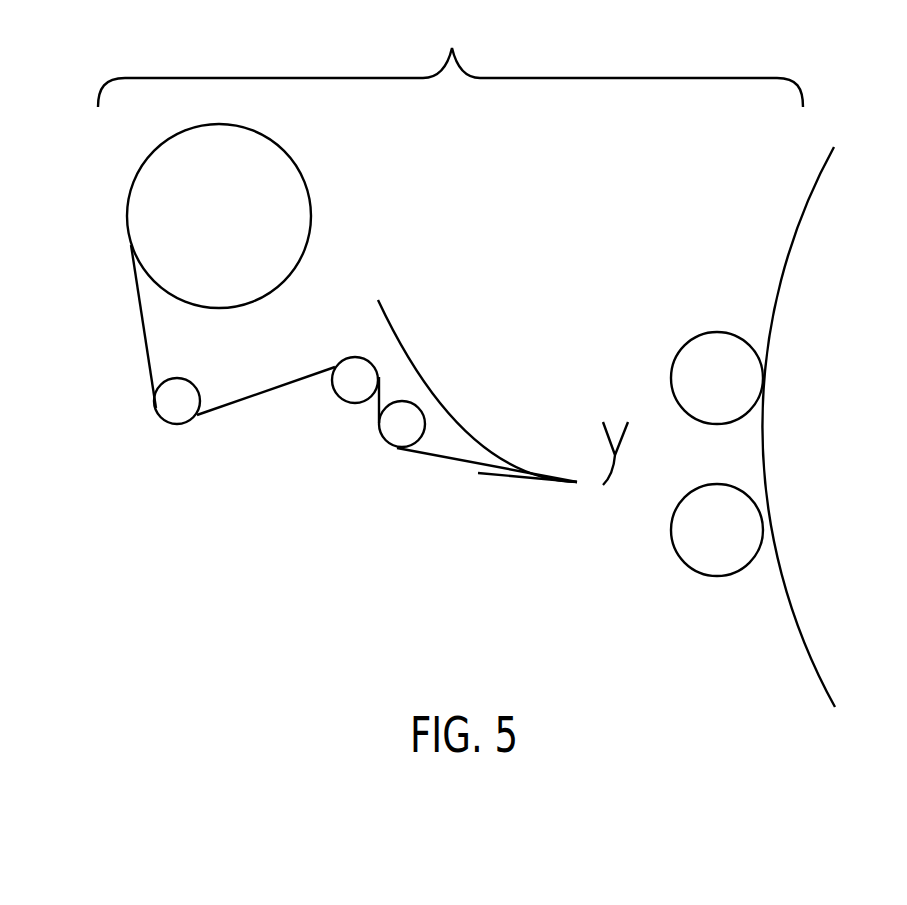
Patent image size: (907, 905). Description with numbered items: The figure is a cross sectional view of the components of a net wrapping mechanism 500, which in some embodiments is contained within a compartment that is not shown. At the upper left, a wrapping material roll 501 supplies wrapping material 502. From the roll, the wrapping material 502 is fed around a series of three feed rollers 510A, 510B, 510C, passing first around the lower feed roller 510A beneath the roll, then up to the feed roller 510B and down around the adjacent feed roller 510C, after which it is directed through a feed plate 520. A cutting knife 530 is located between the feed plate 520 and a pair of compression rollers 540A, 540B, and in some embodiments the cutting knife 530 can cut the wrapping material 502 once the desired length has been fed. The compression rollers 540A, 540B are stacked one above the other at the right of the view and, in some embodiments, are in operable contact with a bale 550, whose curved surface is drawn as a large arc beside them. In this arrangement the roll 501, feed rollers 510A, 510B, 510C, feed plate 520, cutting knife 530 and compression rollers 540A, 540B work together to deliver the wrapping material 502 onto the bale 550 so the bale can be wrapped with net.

The net wrapping mechanism 500 is at (450, 62).
The wrapping material roll 501 is at (145, 163).
The wrapping material 502 is at (140, 322).
The feed roller 510A is at (166, 423).
The feed roller 510B is at (339, 398).
The feed roller 510C is at (395, 447).
The feed plate 520 is at (493, 478).
The cutting knife 530 is at (608, 469).
The compression roller 540A is at (762, 360).
The compression roller 540B is at (764, 530).
The bale 550 is at (799, 635).